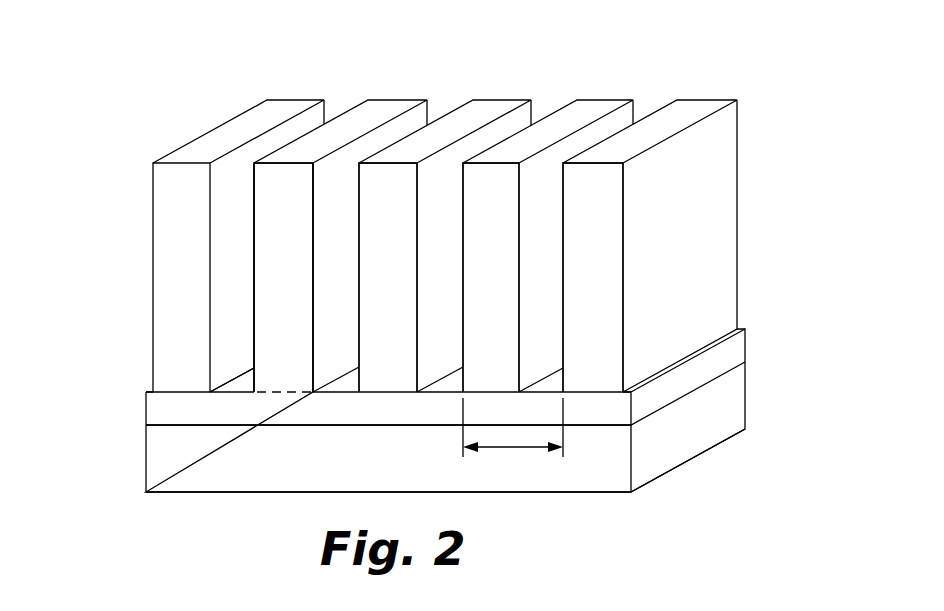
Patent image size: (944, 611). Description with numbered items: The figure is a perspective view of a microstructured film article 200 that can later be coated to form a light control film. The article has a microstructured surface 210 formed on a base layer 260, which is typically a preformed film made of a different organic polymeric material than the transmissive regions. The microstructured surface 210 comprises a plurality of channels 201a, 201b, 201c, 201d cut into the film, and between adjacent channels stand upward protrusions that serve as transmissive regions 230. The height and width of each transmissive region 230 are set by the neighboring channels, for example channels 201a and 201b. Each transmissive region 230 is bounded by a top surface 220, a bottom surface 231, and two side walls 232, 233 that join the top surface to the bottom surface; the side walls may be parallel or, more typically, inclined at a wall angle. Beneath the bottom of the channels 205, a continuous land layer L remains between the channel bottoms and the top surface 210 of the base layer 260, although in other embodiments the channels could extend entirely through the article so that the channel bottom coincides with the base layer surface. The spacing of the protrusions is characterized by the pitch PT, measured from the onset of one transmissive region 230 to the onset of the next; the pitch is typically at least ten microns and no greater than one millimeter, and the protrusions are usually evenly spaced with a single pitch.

The microstructured film article 200 is at (118, 121).
The channel 201a is at (341, 80).
The channel 201b is at (449, 80).
The channel 201c is at (551, 80).
The channel 201d is at (653, 80).
The top surface 220 is at (373, 113).
The transmissive region 230 is at (306, 282).
The side wall 232 is at (253, 249).
The side wall 233 is at (316, 327).
The bottom of the channels 205 is at (233, 388).
The bottom surface 231 is at (283, 393).
The microstructured surface 210 is at (180, 426).
The base layer 260 is at (416, 475).
The land layer L is at (137, 394).
The pitch PT is at (512, 452).